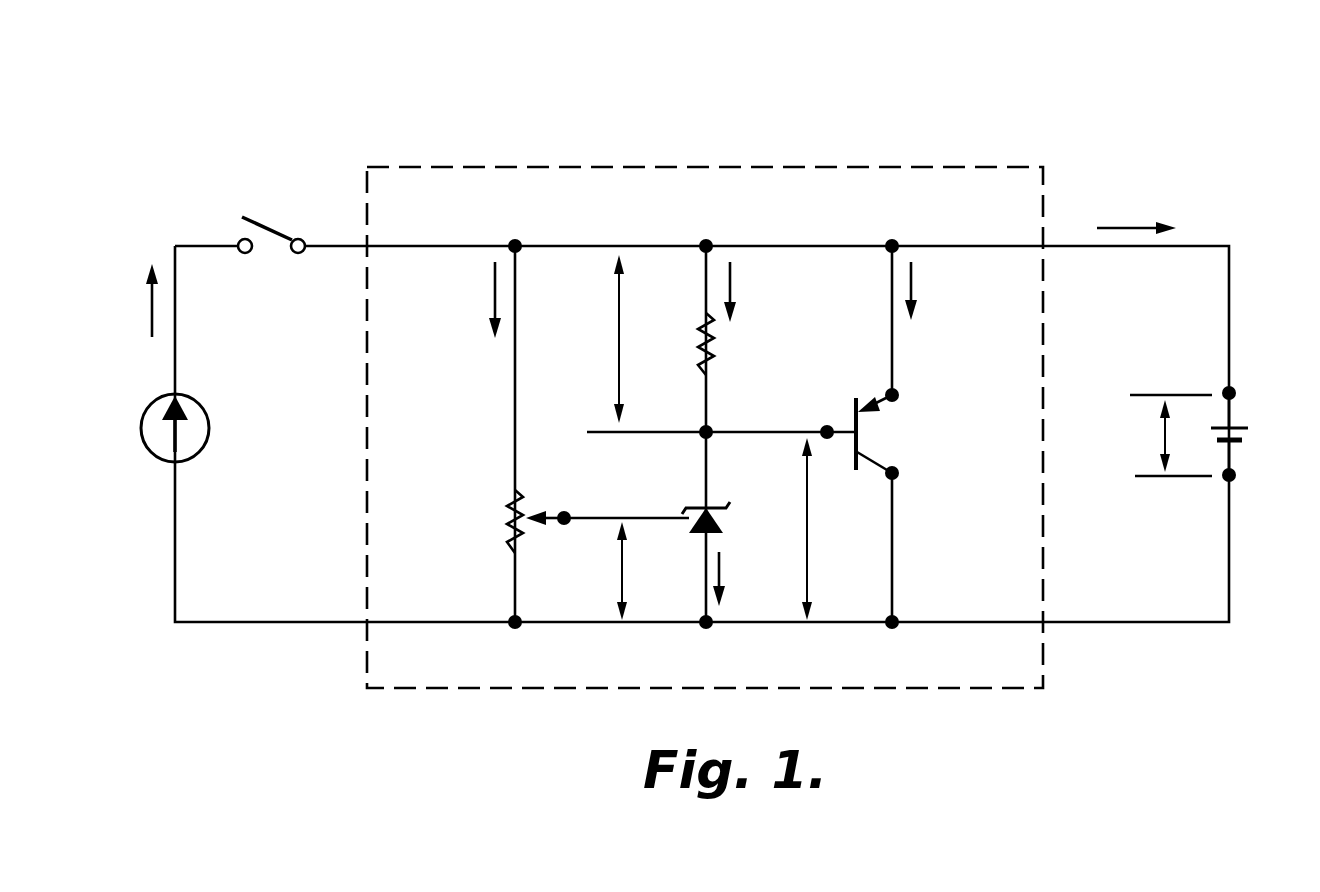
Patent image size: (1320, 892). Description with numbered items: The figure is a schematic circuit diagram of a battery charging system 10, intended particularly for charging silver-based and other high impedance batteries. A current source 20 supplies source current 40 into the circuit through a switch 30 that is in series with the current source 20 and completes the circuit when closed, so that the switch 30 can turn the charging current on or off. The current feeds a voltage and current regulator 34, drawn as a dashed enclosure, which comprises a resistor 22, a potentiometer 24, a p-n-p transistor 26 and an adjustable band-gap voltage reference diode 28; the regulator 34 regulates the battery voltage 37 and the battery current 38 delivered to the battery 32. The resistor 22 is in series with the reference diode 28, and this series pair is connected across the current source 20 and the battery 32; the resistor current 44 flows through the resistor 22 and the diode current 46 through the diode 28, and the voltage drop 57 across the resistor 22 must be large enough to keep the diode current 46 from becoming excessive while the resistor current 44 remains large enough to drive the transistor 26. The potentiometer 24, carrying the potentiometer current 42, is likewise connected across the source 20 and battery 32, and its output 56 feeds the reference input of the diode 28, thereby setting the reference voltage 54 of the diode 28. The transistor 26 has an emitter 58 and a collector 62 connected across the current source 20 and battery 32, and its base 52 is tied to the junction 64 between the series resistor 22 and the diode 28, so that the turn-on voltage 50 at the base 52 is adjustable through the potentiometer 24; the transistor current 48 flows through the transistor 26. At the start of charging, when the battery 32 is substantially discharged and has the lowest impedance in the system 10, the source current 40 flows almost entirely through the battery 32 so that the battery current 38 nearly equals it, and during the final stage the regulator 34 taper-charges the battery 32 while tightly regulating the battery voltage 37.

The battery charging system 10 is at (290, 130).
The current source Ic 20 is at (198, 405).
The resistor R1 22 is at (700, 320).
The potentiometer R2 24 is at (512, 552).
The transistor Q1 26 is at (858, 470).
The adjustable band-gap voltage reference diode U1 28 is at (696, 534).
The switch S1 30 is at (288, 232).
The battery B1 32 is at (1236, 420).
The voltage and current regulator 34 is at (525, 163).
The battery voltage VB1 37 is at (1148, 410).
The battery current IB1 38 is at (1162, 224).
The source current Ic1 40 is at (152, 334).
The current IR2 42 is at (490, 320).
The current IR1 44 is at (730, 264).
The current IU1 46 is at (719, 552).
The current IQ1 48 is at (911, 264).
The turn-on voltage VQ1 50 is at (802, 490).
The base 52 is at (826, 425).
The reference voltage VU1 54 is at (612, 582).
The output 56 is at (563, 510).
The voltage drop VR1 57 is at (610, 346).
The emitter 58 is at (900, 392).
The collector 62 is at (900, 472).
The junction 64 is at (710, 426).